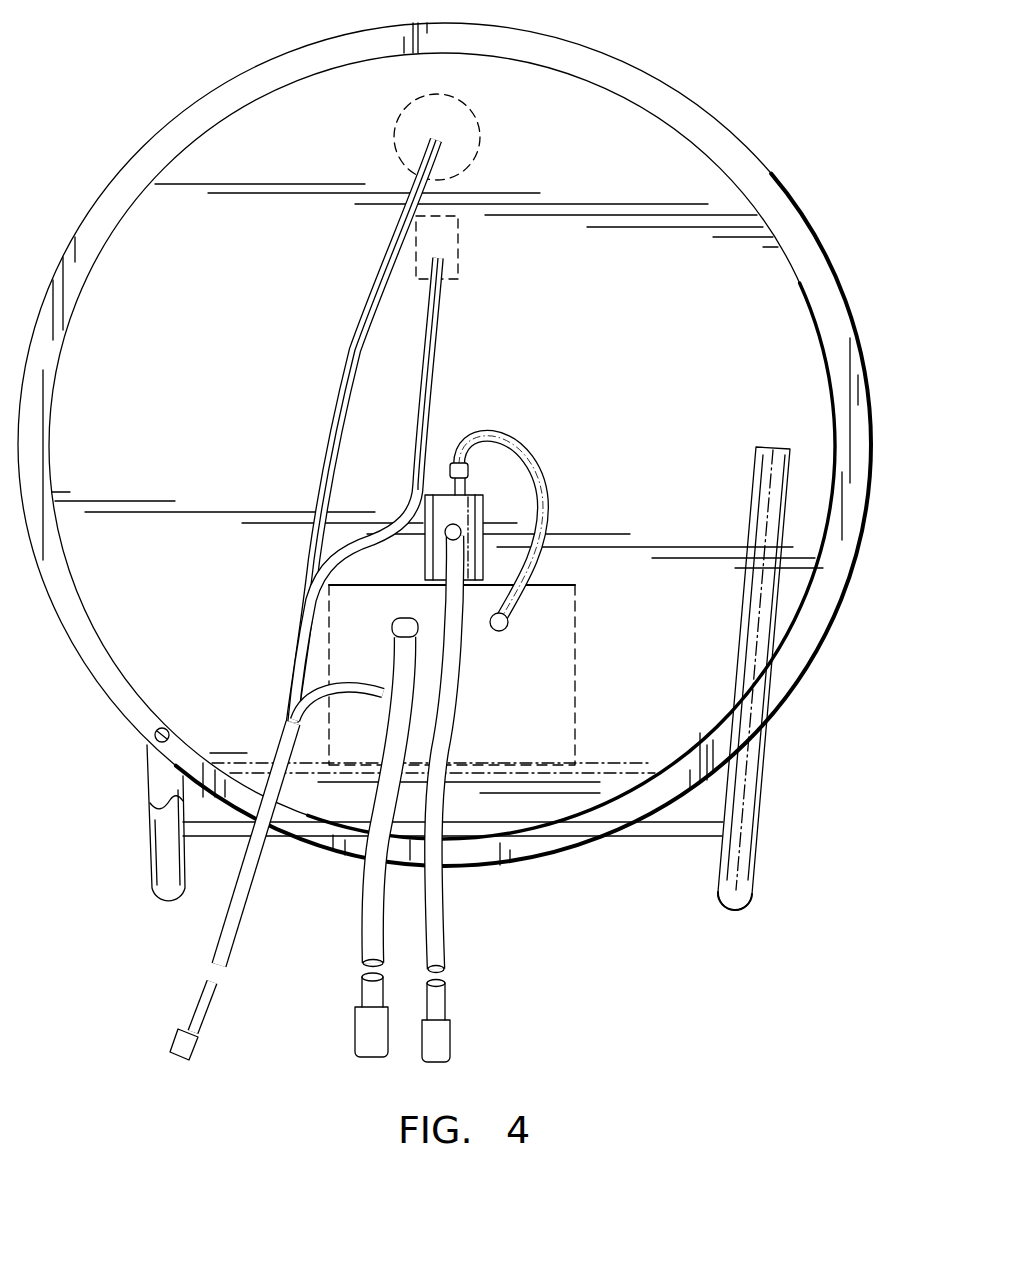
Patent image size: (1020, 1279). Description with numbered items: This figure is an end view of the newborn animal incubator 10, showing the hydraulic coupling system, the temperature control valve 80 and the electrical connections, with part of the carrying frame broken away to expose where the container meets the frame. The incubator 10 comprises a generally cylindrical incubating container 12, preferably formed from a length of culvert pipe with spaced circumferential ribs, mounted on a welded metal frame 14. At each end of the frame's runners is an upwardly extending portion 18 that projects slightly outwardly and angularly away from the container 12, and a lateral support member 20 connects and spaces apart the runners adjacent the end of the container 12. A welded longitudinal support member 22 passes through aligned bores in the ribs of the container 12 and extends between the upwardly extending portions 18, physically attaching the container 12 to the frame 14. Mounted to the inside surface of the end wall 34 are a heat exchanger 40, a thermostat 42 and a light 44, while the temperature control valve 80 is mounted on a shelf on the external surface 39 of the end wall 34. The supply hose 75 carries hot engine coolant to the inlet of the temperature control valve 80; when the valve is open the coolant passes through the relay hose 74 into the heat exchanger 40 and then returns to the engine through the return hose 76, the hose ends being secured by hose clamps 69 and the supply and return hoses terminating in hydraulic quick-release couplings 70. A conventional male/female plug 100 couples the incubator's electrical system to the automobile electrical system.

The newborn animal incubator 10 is at (714, 102).
The incubating container 12 is at (774, 180).
The frame 14 is at (742, 905).
The upwardly extending portion 18 is at (163, 858).
The lateral support member 20 is at (638, 837).
The longitudinal support member 22 is at (150, 732).
The end wall 34 is at (777, 283).
The external surface 39 is at (729, 280).
The heat exchanger 40 is at (578, 645).
The thermostat 42 is at (458, 262).
The light 44 is at (481, 137).
The hose clamp 69 is at (448, 461).
The hydraulic quick-release coupling 70 is at (355, 1023).
The relay hose 74 is at (526, 441).
The supply hose 75 is at (445, 943).
The return hose 76 is at (362, 935).
The temperature control valve 80 is at (482, 513).
The male/female plug 100 is at (199, 1042).